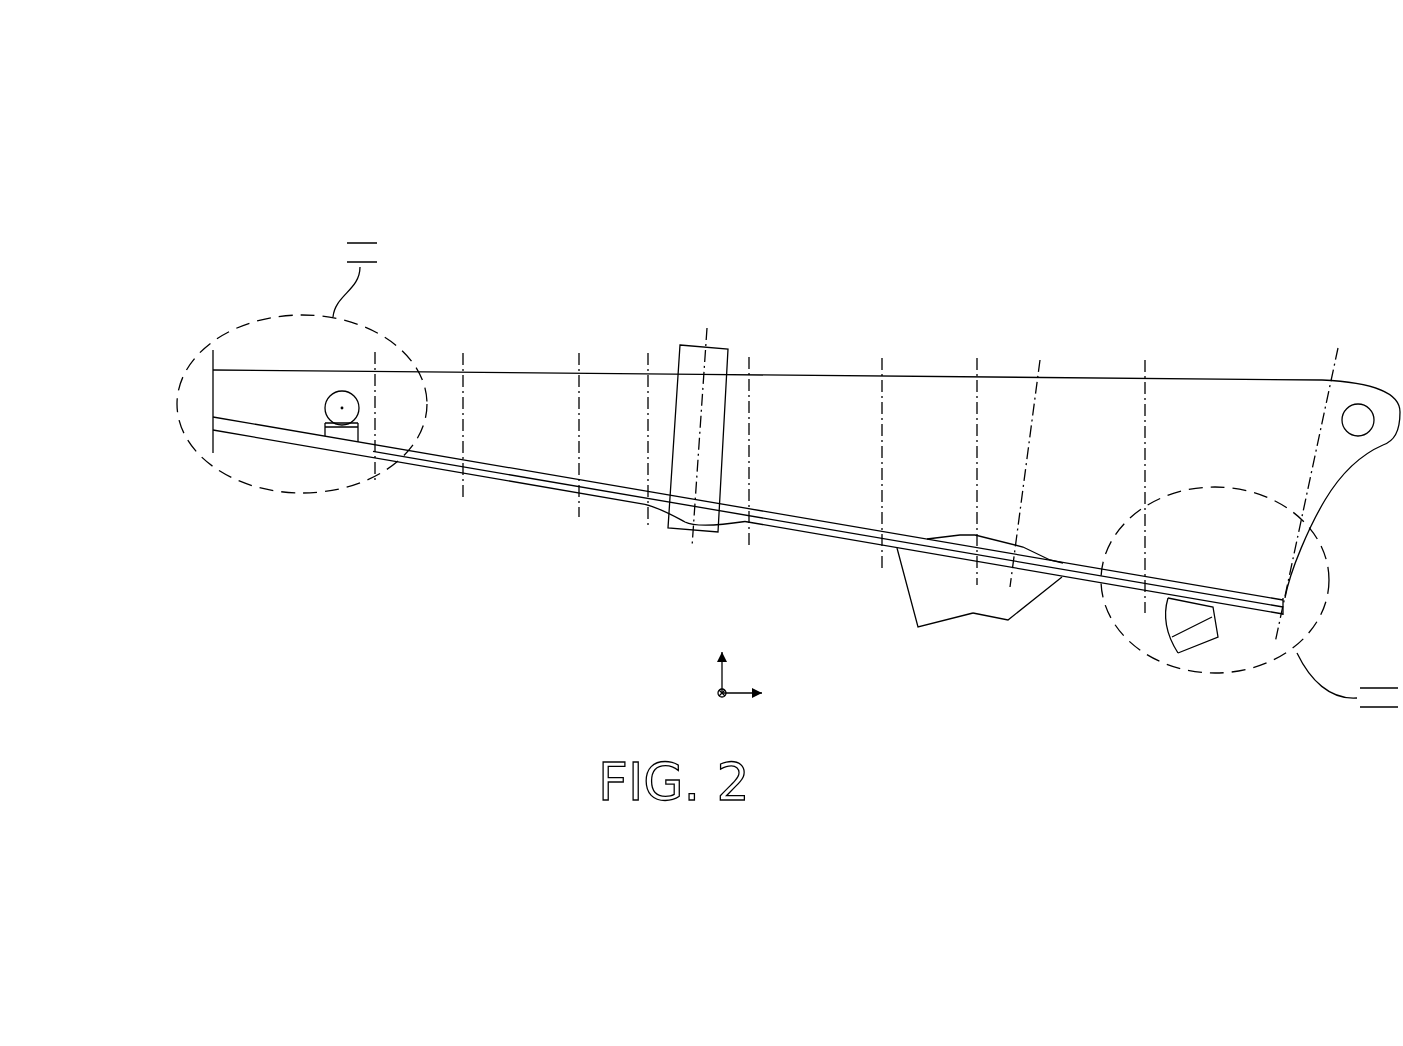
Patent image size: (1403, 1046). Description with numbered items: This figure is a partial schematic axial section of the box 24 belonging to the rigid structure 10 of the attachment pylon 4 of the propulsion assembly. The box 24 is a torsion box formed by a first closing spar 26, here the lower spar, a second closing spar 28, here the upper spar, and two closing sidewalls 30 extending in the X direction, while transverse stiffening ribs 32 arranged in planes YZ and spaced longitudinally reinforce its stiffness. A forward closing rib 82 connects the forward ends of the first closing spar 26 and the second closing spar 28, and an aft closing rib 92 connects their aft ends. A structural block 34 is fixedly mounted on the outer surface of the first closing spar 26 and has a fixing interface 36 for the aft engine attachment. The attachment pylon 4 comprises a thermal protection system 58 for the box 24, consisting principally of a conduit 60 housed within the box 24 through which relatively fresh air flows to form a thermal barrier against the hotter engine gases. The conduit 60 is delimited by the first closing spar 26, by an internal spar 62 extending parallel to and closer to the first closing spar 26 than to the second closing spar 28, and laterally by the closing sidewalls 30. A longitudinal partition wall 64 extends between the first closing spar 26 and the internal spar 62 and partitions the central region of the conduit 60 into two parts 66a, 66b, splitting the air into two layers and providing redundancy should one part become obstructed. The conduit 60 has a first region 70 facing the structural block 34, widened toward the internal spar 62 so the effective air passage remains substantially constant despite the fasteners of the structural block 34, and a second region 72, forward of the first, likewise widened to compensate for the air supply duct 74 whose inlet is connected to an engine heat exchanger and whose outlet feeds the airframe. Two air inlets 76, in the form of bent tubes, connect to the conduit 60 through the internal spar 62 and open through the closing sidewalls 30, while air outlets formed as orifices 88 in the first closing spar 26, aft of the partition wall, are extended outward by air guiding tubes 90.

The attachment pylon 4 is at (782, 420).
The rigid structure 10 is at (1265, 215).
The box 24 is at (1217, 377).
The first closing spar 26 is at (528, 484).
The second closing spar 28 is at (520, 370).
The closing sidewalls 30 is at (852, 387).
The transverse stiffening ribs 32 is at (648, 403).
The structural block 34 is at (910, 612).
The fixing interface 36 is at (995, 622).
The thermal protection system 58 is at (547, 473).
The conduit 60 is at (303, 445).
The internal spar 62 is at (300, 430).
The longitudinal partition wall 64 is at (782, 514).
The first part of the conduit 66a is at (838, 538).
The second part of the conduit 66b is at (838, 524).
The first region 70 is at (998, 548).
The second region 72 is at (678, 533).
The air supply duct 74 is at (727, 408).
The air inlets 76 is at (360, 423).
The forward closing rib 82 is at (213, 385).
The orifices 88 is at (1193, 600).
The air guiding tubes 90 is at (1172, 647).
The aft closing rib 92 is at (1292, 590).